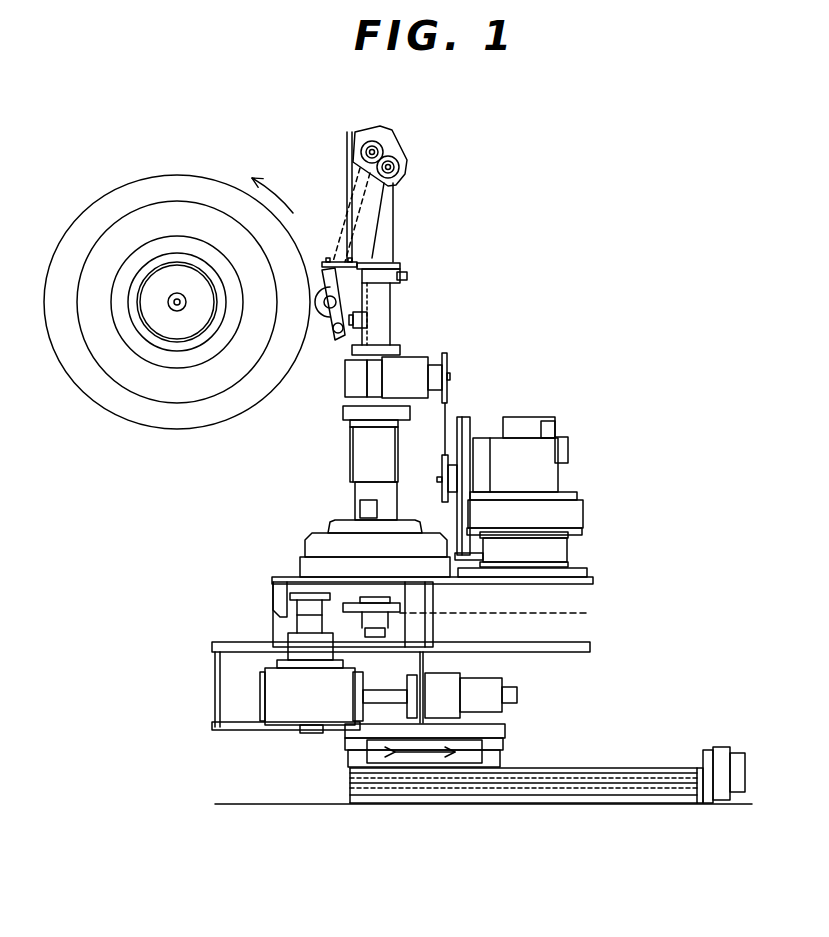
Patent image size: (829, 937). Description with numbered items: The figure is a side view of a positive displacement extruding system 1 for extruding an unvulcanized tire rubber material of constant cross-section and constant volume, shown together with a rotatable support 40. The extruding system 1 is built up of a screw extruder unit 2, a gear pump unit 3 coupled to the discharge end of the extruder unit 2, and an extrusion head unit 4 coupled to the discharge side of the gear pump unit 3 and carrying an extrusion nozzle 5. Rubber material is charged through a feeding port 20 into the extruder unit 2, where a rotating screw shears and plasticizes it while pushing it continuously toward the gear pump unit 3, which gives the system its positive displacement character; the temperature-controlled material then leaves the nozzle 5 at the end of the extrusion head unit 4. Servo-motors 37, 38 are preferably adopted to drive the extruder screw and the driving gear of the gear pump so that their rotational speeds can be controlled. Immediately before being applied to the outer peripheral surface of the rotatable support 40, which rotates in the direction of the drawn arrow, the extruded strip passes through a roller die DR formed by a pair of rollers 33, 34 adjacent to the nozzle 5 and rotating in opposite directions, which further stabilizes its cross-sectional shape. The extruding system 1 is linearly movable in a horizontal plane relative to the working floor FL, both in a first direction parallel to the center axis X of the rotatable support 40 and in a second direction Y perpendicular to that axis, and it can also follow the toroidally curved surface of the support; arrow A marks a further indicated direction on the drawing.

The extruding system 1 is at (330, 452).
The screw extruder unit 2 is at (400, 455).
The gear pump unit 3 is at (418, 355).
The extrusion head unit 4 is at (392, 318).
The extrusion nozzle 5 is at (372, 313).
The feeding port 20 is at (360, 507).
The roller 33 is at (322, 289).
The roller 34 is at (323, 345).
The servo-motor 37 is at (542, 553).
The servo-motor 38 is at (537, 468).
The rotatable support 40 is at (168, 172).
The center axis X is at (177, 302).
The direction A is at (342, 377).
The roller die DR is at (323, 330).
The working floor FL is at (250, 802).
The second direction Y is at (427, 753).